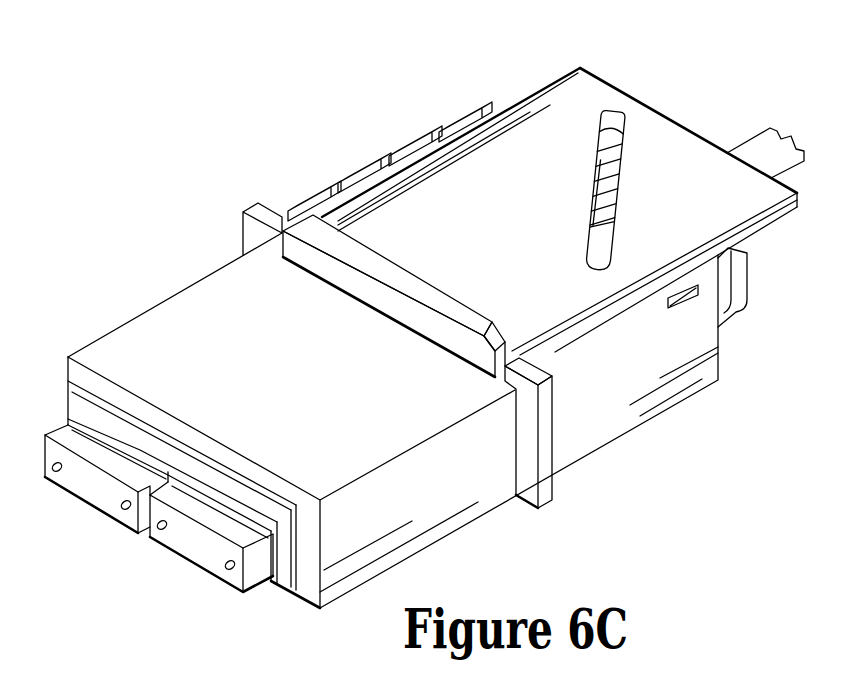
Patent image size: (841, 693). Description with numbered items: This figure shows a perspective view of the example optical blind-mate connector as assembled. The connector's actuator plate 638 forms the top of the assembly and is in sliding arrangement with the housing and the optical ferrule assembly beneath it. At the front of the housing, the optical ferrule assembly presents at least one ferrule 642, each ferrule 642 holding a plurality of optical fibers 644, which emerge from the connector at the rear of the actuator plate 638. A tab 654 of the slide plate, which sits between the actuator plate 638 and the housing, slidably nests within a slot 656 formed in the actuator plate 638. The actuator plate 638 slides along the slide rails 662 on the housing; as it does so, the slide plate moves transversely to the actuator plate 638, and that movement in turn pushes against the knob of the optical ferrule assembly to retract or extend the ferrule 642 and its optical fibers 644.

The actuator plate 638 is at (538, 88).
The ferrule 642 is at (187, 562).
The optical fibers 644 is at (747, 137).
The tab 654 is at (593, 248).
The slot 656 is at (603, 143).
The slide rails 662 is at (307, 200).